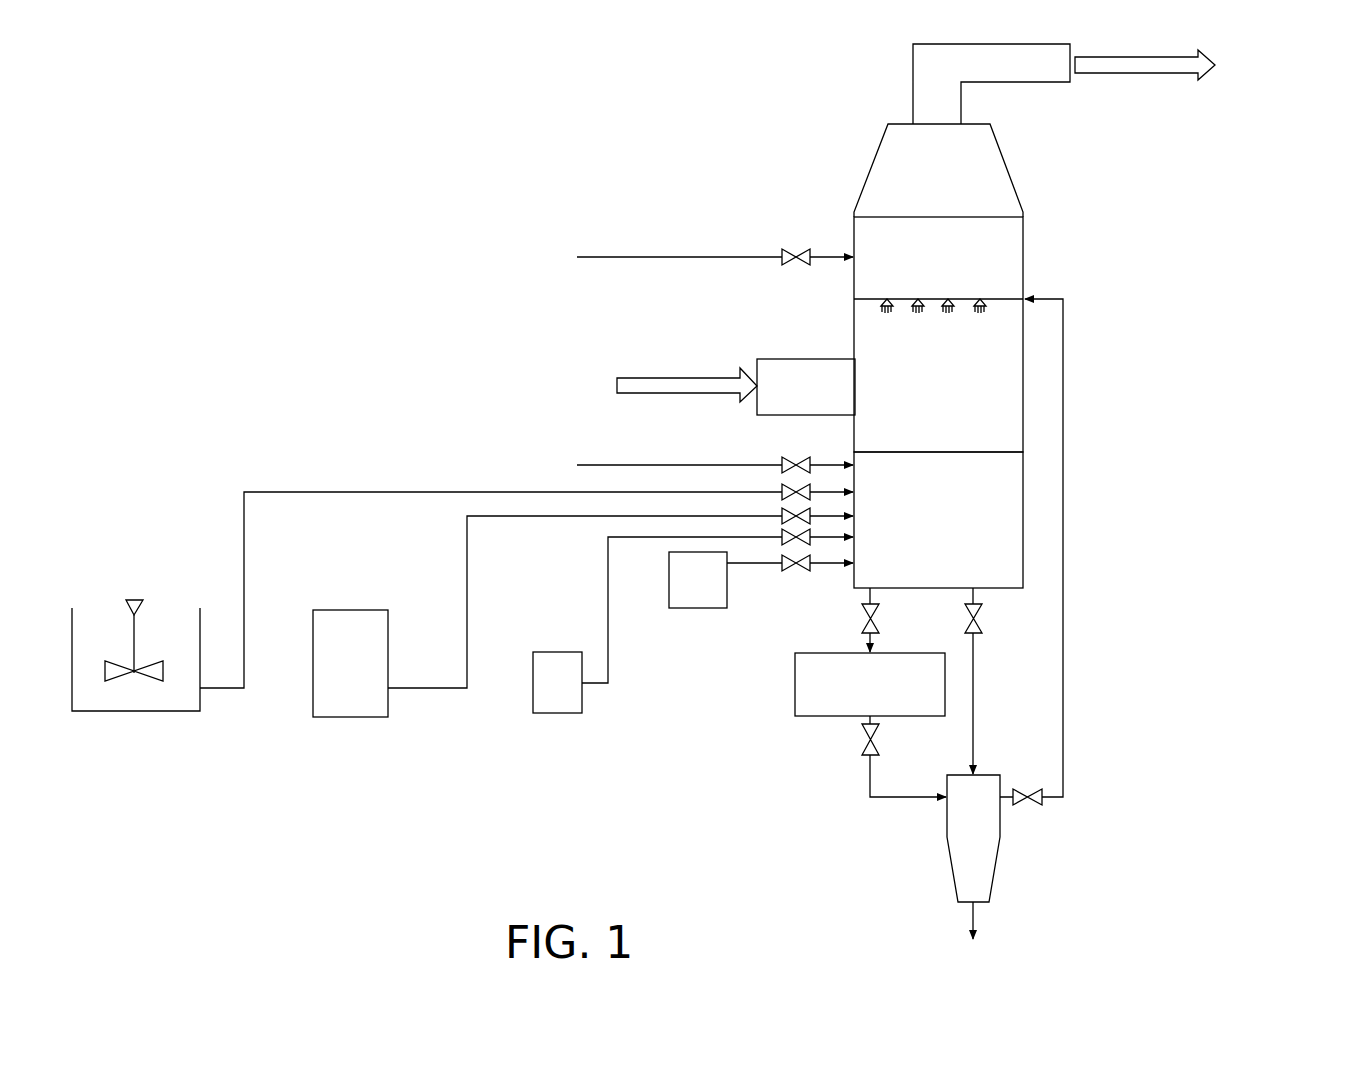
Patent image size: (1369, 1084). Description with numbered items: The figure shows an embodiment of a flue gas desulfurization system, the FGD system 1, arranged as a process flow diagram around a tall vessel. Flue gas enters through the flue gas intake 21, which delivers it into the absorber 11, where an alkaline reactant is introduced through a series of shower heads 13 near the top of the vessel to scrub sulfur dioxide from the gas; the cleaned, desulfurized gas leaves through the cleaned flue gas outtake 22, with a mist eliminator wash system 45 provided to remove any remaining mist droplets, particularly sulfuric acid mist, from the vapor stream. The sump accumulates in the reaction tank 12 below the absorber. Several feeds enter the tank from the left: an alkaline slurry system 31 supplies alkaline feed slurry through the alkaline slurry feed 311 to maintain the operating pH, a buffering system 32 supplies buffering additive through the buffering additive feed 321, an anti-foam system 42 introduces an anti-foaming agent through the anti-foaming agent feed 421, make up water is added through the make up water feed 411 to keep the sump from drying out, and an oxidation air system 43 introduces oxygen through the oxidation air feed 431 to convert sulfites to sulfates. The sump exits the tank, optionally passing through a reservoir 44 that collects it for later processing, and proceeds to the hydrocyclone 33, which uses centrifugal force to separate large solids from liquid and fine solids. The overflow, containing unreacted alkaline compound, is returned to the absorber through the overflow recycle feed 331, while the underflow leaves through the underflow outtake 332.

The FGD system 1 is at (724, 104).
The absorber 11 is at (932, 374).
The reaction tank 12 is at (932, 505).
The shower heads 13 is at (890, 297).
The flue gas intake 21 is at (648, 378).
The cleaned flue gas outtake 22 is at (1115, 74).
The alkaline slurry system 31 is at (106, 584).
The alkaline slurry feed 311 is at (244, 526).
The buffering system 32 is at (351, 599).
The buffering additive feed 321 is at (467, 560).
The hydrocyclone 33 is at (950, 864).
The overflow recycle feed 331 is at (1063, 547).
The underflow outtake 332 is at (976, 920).
The make up water feed 411 is at (680, 465).
The anti-foam system 42 is at (552, 644).
The anti-foaming agent feed 421 is at (608, 568).
The oxidation air system 43 is at (736, 601).
The oxidation air feed 431 is at (772, 572).
The reservoir 44 is at (860, 685).
The mist eliminator wash system 45 is at (672, 257).